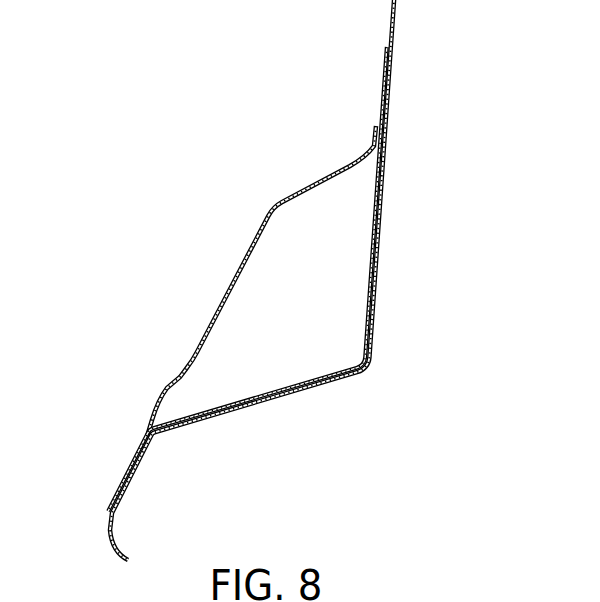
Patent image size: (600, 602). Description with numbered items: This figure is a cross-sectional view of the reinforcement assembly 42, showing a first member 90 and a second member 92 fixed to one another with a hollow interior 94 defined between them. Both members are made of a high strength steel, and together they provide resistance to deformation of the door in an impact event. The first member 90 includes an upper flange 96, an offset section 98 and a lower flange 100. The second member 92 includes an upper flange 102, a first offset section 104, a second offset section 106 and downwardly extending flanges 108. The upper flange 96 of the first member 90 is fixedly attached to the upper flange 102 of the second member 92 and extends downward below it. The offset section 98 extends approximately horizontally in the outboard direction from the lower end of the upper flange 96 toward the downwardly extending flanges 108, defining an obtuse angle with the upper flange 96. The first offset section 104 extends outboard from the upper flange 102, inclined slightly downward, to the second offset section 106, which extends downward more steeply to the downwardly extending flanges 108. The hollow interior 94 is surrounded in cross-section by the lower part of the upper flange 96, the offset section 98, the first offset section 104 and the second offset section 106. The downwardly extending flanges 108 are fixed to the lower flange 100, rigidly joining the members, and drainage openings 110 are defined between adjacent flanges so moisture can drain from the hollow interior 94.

The reinforcement assembly 42 is at (168, 156).
The first member 90 is at (386, 222).
The second member 92 is at (236, 250).
The hollow interior 94 is at (322, 290).
The upper flange 96 is at (397, 7).
The offset section 98 is at (273, 392).
The lower flange 100 is at (142, 483).
The upper flange 102 is at (381, 91).
The first offset section 104 is at (323, 180).
The second offset section 106 is at (212, 320).
The downwardly extending flanges 108 is at (118, 486).
The drainage openings 110 is at (147, 431).